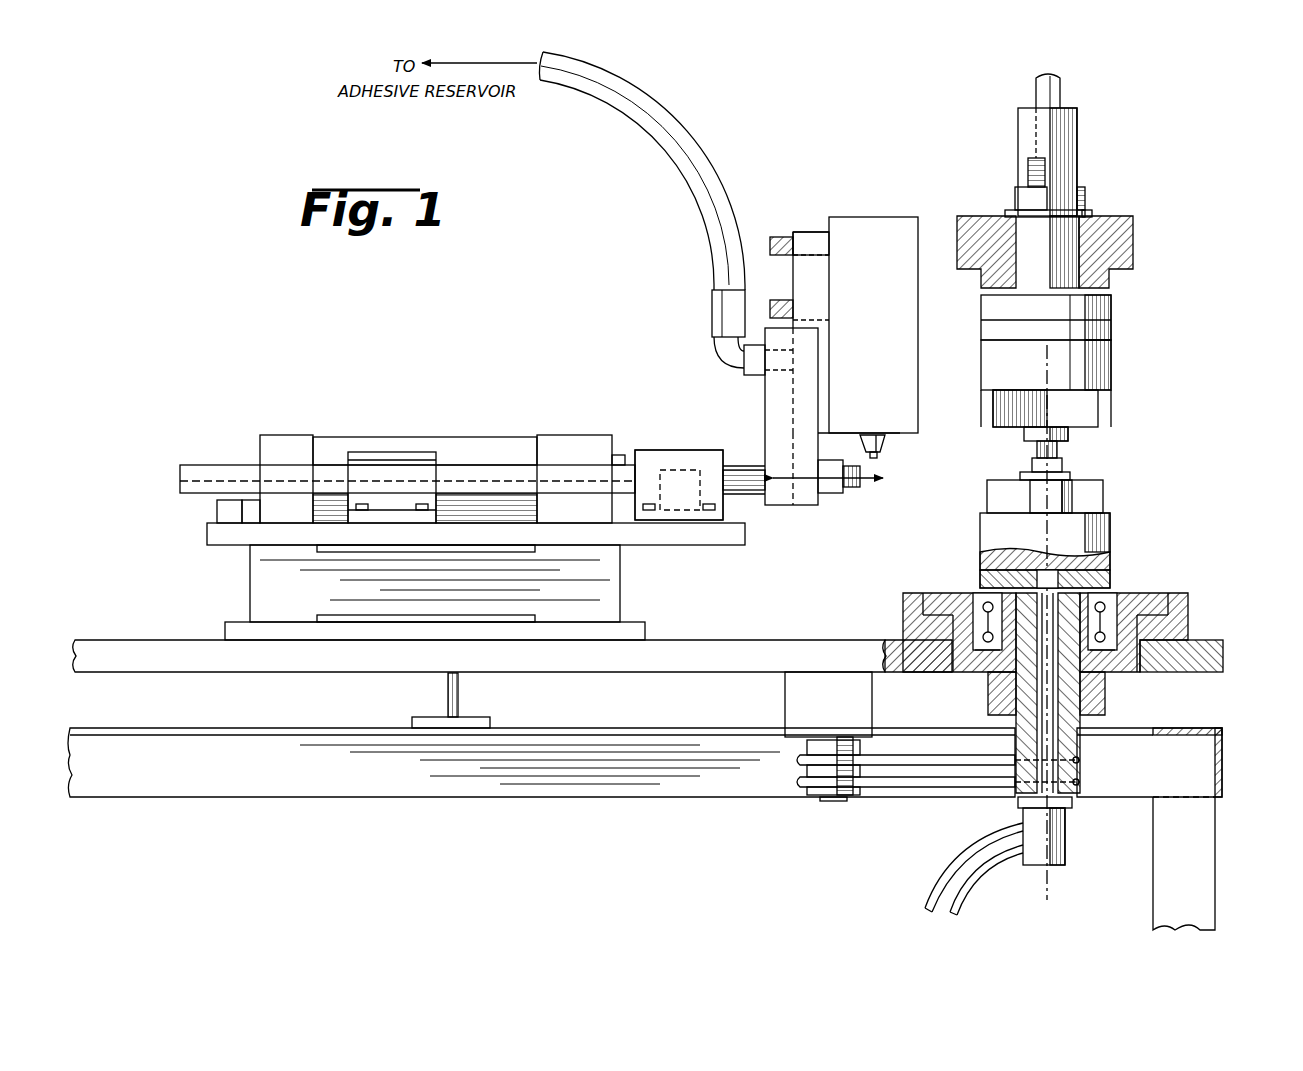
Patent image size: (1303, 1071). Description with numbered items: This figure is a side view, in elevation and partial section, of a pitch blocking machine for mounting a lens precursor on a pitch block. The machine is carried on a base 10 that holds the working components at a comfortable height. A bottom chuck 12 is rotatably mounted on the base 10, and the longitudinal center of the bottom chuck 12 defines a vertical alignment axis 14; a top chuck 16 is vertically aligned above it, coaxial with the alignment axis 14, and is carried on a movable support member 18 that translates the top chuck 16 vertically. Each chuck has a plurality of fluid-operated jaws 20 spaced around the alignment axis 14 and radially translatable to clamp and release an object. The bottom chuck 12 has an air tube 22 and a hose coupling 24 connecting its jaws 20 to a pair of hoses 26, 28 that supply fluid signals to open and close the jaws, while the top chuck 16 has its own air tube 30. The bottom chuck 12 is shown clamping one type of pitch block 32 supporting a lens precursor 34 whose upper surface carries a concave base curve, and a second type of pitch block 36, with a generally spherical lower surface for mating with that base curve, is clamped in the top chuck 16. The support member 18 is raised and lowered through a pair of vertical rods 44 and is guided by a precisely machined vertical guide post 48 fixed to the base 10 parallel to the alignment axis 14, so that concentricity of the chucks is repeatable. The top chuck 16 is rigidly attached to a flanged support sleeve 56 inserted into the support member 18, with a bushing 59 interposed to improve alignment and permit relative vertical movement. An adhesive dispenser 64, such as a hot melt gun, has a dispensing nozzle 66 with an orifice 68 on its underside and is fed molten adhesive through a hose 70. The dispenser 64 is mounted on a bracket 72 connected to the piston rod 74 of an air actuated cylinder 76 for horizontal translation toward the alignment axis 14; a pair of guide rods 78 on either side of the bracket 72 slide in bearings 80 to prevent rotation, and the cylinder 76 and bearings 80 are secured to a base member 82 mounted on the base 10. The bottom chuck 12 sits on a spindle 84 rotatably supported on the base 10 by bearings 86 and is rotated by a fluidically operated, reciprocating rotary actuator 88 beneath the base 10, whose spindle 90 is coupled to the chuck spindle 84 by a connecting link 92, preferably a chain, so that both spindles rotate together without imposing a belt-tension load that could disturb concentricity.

The base 10 is at (1223, 655).
The bottom chuck 12 is at (1095, 540).
The vertical alignment axis 14 is at (1045, 540).
The top chuck 16 is at (1100, 370).
The movable support member 18 is at (1133, 243).
The jaws 20 is at (992, 488).
The air tube 22 is at (1055, 718).
The hose coupling 24 is at (1058, 840).
The hose 26 is at (985, 843).
The hose 28 is at (985, 890).
The air tube 30 is at (1060, 85).
The pitch block 32 is at (1025, 475).
The lens precursor 34 is at (1062, 464).
The pitch block 36 is at (1068, 432).
The vertical rods 44 is at (1030, 170).
The vertical guide post 48 is at (1068, 140).
The flanged support sleeve 56 is at (1108, 310).
The bushing 59 is at (1092, 215).
The adhesive dispenser 64 is at (850, 215).
The dispensing nozzle 66 is at (884, 441).
The orifice 68 is at (882, 460).
The hose 70 is at (655, 102).
The bracket 72 is at (768, 405).
The piston rod 74 is at (646, 468).
The air actuated cylinder 76 is at (372, 437).
The guide rods 78 is at (565, 470).
The bearings 80 is at (412, 468).
The base member 82 is at (257, 587).
The spindle 84 is at (1070, 608).
The bearings 86 is at (1105, 612).
The rotary actuator 88 is at (787, 704).
The spindle 90 is at (810, 790).
The connecting link 92 is at (915, 758).